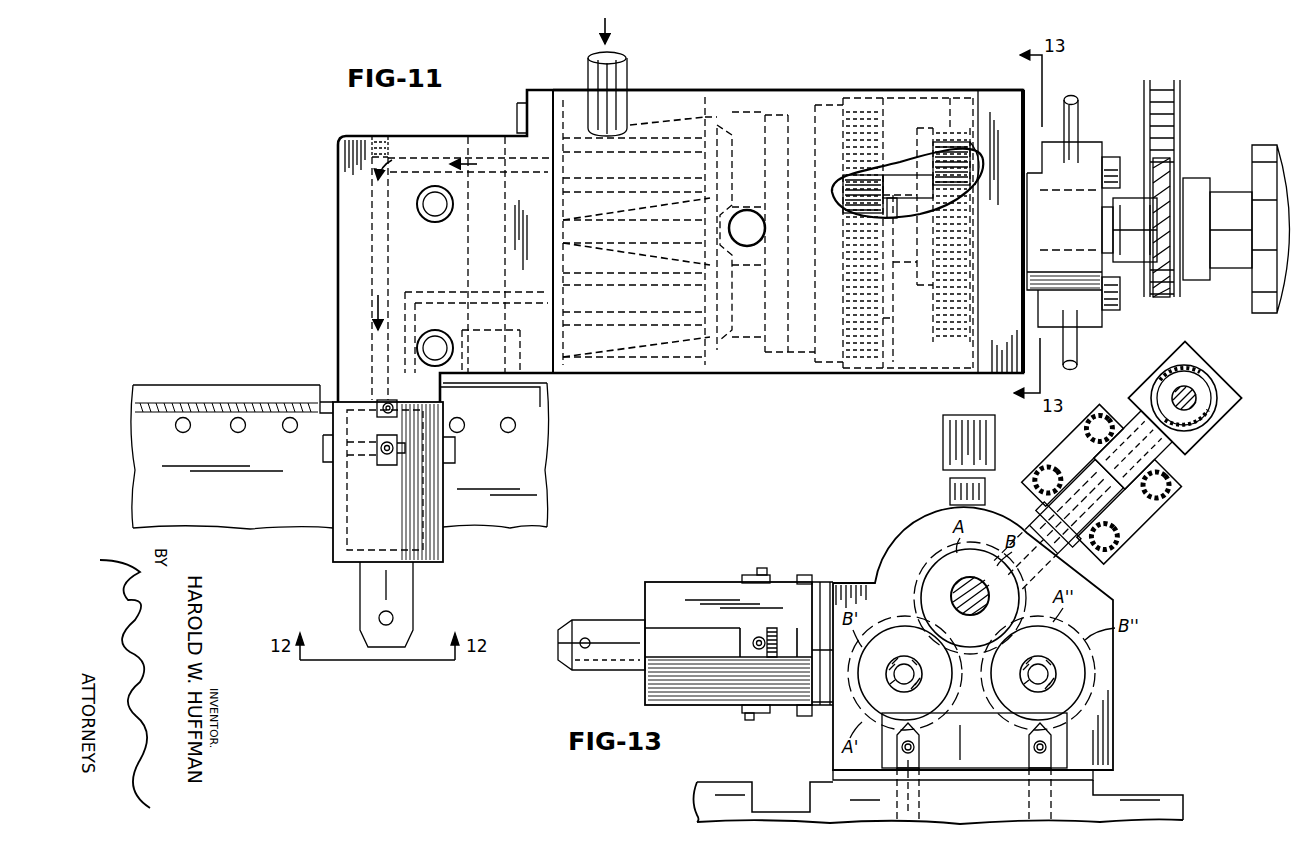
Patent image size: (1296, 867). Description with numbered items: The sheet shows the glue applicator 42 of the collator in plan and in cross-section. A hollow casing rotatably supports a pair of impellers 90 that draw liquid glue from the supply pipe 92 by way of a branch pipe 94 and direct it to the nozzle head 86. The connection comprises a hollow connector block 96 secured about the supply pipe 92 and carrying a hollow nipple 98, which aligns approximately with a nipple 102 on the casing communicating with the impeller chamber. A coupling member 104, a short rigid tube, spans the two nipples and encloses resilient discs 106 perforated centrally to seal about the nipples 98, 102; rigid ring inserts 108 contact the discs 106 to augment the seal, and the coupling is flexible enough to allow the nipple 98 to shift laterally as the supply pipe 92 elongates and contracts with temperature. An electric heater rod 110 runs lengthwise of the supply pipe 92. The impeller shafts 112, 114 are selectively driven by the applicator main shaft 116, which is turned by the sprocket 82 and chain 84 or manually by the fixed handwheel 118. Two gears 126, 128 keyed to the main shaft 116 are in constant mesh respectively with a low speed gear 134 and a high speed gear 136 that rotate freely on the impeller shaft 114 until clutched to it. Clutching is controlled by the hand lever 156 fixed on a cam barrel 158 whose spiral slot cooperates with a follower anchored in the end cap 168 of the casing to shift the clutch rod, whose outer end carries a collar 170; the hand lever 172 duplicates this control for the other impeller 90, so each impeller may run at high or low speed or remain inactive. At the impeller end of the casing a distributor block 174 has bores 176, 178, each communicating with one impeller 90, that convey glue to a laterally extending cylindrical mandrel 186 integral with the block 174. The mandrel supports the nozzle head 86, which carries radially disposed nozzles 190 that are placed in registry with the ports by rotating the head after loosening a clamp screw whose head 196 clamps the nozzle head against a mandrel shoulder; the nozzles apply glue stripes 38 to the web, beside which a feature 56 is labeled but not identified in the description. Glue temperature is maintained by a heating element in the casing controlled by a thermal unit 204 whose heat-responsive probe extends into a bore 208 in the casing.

In FIG. 11, the glue stripes 38 is at (218, 385).
In FIG. 11, the glue applicator 42 is at (723, 88).
In FIG. 13, the glue applicator 42 is at (892, 562).
In FIG. 11, the knurled strip 56 is at (147, 385).
In FIG. 11, the sprocket 82 is at (1172, 172).
In FIG. 11, the chain 84 is at (1180, 116).
In FIG. 11, the nozzle head 86 is at (333, 552).
In FIG. 13, the nozzle head 86 is at (600, 670).
In FIG. 11, the impellers 90 is at (636, 118).
In FIG. 13, the supply pipe 92 is at (1214, 377).
In FIG. 13, the branch pipe 94 is at (1037, 486).
In FIG. 13, the hollow connector block 96 is at (1238, 395).
In FIG. 13, the hollow nipple 98 is at (1180, 460).
In FIG. 11, the nipple 102 is at (617, 60).
In FIG. 13, the nipple 102 is at (1095, 566).
In FIG. 13, the coupling member 104 is at (1158, 523).
In FIG. 13, the resilient discs 106 is at (1078, 447).
In FIG. 13, the rigid ring inserts 108 is at (1100, 422).
In FIG. 13, the electric heater rod 110 is at (1188, 392).
In FIG. 11, the impeller shaft 112 is at (752, 112).
In FIG. 11, the impeller shaft 114 is at (746, 345).
In FIG. 11, the applicator main shaft 116 is at (1110, 228).
In FIG. 13, the applicator main shaft 116 is at (950, 596).
In FIG. 11, the handwheel 118 is at (1263, 145).
In FIG. 11, the gear 126 is at (880, 178).
In FIG. 11, the gear 128 is at (942, 145).
In FIG. 11, the low speed gear 134 is at (860, 105).
In FIG. 11, the high speed gear 136 is at (952, 105).
In FIG. 11, the hand lever 156 is at (1077, 350).
In FIG. 11, the cam barrel 158 is at (1083, 142).
In FIG. 11, the end cap 168 is at (1005, 98).
In FIG. 11, the collar 170 is at (1114, 157).
In FIG. 11, the hand lever 172 is at (1074, 96).
In FIG. 11, the distributor block 174 is at (337, 262).
In FIG. 11, the bore 176 is at (345, 247).
In FIG. 11, the bore 178 is at (425, 292).
In FIG. 11, the cylindrical mandrel 186 is at (345, 537).
In FIG. 11, the nozzles 190 is at (325, 404).
In FIG. 13, the nozzles 190 is at (760, 568).
In FIG. 11, the head 196 is at (360, 591).
In FIG. 13, the thermal unit 204 is at (943, 440).
In FIG. 11, the bore 208 is at (750, 210).